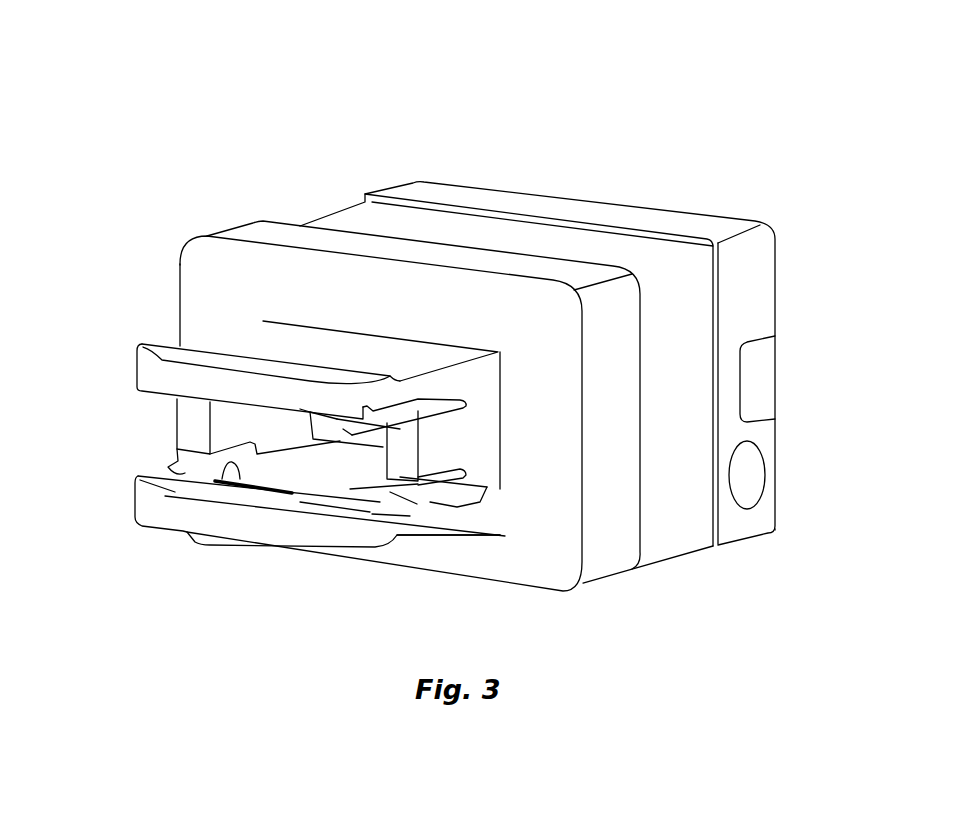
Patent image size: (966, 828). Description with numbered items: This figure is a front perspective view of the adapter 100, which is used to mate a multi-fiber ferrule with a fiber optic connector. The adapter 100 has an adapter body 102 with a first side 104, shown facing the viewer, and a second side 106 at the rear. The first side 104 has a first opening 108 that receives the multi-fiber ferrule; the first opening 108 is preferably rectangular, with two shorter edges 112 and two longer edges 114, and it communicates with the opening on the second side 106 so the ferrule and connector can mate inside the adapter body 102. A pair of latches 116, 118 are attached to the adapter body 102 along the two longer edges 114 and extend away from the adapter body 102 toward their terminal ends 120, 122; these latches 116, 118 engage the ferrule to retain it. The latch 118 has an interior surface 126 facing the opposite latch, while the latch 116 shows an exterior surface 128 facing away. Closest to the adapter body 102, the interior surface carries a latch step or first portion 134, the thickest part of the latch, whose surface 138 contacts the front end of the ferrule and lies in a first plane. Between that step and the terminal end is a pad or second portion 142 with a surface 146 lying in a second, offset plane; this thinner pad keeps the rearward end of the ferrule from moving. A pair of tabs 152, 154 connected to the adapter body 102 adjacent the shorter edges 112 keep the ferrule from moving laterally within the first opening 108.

The adapter 100 is at (556, 128).
The adapter body 102 is at (322, 224).
The first side 104 is at (105, 197).
The second side 106 is at (834, 232).
The first opening 108 is at (330, 460).
The shorter edges 112 is at (308, 423).
The longer edges 114 is at (358, 510).
The latch 116 is at (157, 357).
The latch 118 is at (495, 533).
The terminal end 120 is at (150, 380).
The terminal end 122 is at (162, 513).
The interior surface 126 is at (173, 477).
The exterior surface 128 is at (347, 357).
The latch step or first portion 134 is at (487, 488).
The surface 138 is at (223, 483).
The pad or second portion 142 is at (377, 523).
The surface 146 is at (197, 481).
The tab 152 is at (473, 451).
The tab 154 is at (187, 430).